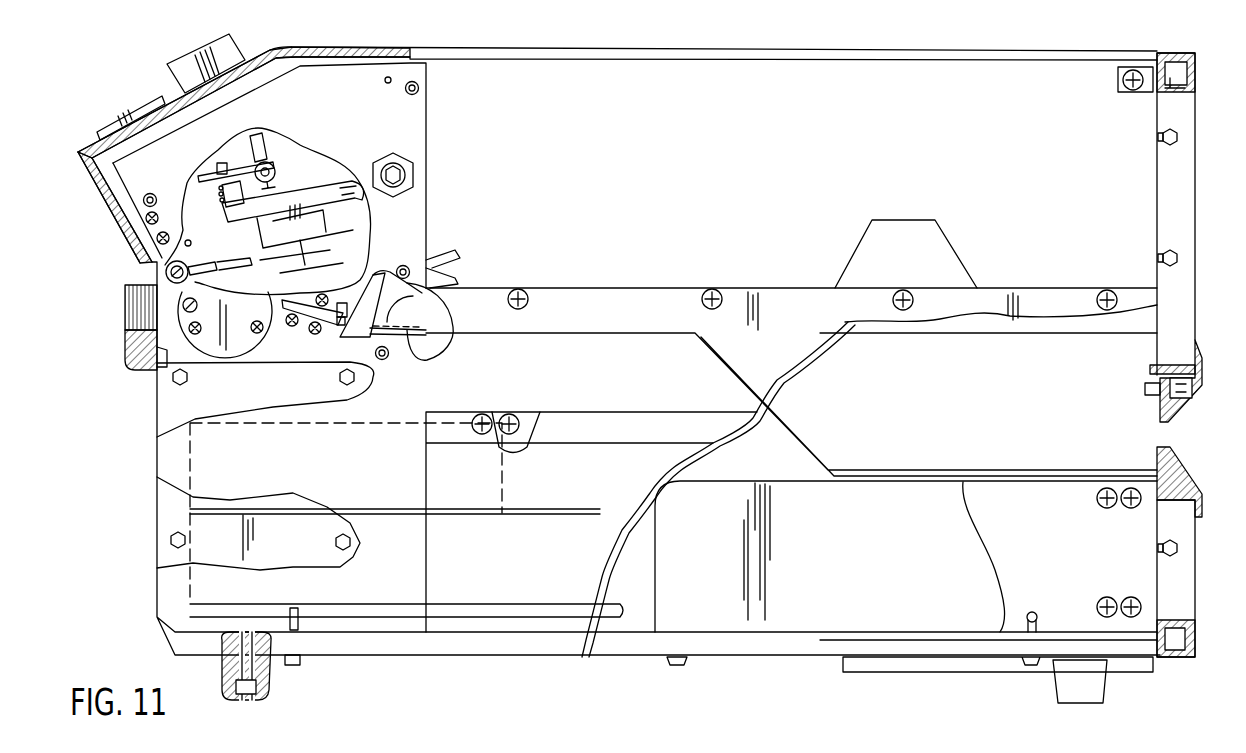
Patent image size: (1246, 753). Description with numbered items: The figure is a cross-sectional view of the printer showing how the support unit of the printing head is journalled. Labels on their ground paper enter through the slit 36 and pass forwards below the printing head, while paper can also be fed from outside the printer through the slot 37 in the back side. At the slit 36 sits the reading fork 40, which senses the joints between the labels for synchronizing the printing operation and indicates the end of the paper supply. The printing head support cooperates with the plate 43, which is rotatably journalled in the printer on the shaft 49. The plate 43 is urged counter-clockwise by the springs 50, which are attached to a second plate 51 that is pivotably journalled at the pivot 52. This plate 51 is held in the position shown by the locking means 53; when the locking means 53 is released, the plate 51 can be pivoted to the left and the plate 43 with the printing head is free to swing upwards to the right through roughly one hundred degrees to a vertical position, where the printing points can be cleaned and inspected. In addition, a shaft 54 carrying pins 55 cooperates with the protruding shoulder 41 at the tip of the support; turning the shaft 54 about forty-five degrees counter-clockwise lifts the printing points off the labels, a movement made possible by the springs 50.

The slit 36 is at (403, 333).
The slot 37 is at (1194, 474).
The reading fork 40 is at (340, 318).
The protruding shoulder 41 is at (203, 266).
The plate 43 is at (318, 190).
The shaft 49 is at (405, 175).
The springs 50 is at (222, 195).
The plate 51 is at (203, 177).
The pivot 52 is at (150, 193).
The locking means 53 is at (270, 165).
The shaft 54 is at (166, 272).
The pins 55 is at (203, 295).